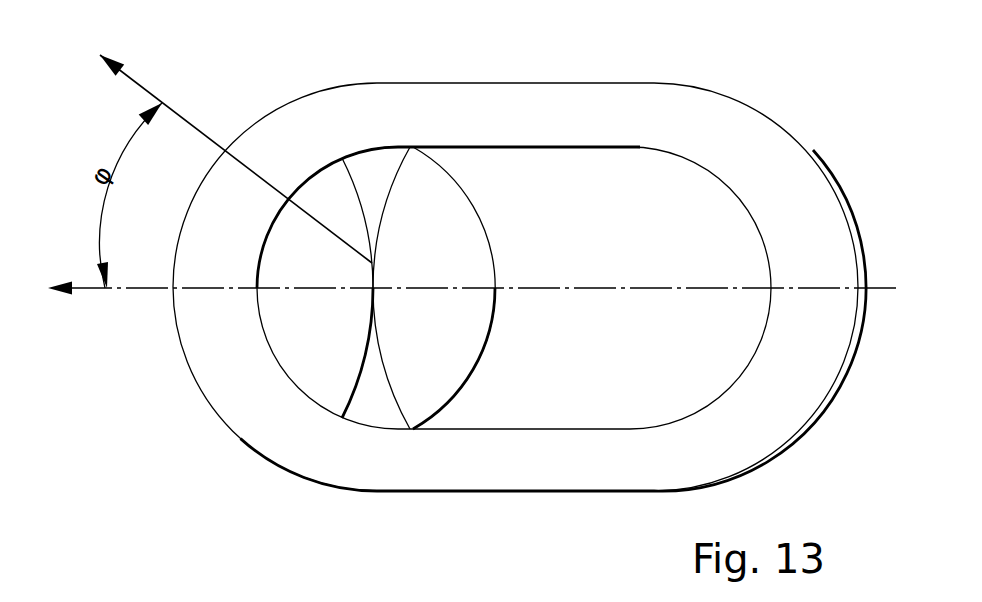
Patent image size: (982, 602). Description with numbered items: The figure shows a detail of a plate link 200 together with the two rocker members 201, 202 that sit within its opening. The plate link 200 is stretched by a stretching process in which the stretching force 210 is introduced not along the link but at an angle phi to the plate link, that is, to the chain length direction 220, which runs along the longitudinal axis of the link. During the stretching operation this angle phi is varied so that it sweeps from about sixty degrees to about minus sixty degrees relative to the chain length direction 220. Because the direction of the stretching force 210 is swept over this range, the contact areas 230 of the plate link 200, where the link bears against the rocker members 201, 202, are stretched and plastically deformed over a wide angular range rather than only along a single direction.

The plate link 200 is at (490, 102).
The rocker member 201 is at (433, 380).
The rocker member 202 is at (327, 368).
The stretching force 210 is at (186, 122).
The chain length direction 220 is at (884, 290).
The contact areas 230 is at (225, 387).